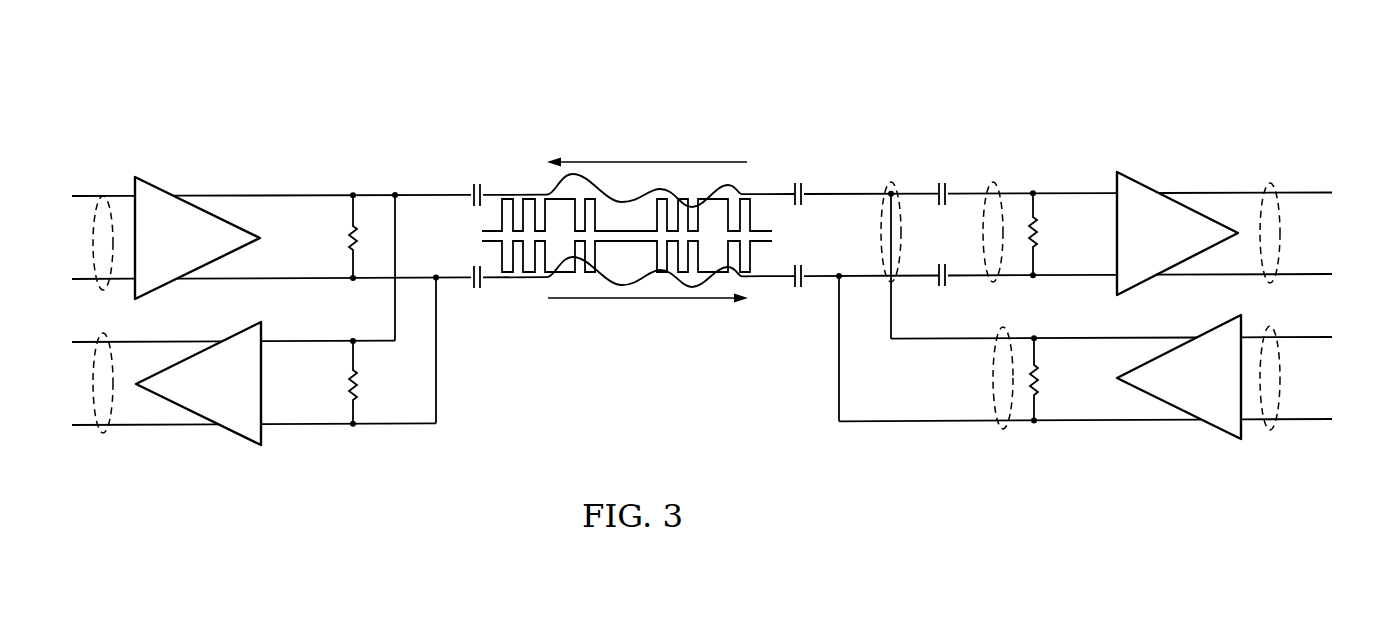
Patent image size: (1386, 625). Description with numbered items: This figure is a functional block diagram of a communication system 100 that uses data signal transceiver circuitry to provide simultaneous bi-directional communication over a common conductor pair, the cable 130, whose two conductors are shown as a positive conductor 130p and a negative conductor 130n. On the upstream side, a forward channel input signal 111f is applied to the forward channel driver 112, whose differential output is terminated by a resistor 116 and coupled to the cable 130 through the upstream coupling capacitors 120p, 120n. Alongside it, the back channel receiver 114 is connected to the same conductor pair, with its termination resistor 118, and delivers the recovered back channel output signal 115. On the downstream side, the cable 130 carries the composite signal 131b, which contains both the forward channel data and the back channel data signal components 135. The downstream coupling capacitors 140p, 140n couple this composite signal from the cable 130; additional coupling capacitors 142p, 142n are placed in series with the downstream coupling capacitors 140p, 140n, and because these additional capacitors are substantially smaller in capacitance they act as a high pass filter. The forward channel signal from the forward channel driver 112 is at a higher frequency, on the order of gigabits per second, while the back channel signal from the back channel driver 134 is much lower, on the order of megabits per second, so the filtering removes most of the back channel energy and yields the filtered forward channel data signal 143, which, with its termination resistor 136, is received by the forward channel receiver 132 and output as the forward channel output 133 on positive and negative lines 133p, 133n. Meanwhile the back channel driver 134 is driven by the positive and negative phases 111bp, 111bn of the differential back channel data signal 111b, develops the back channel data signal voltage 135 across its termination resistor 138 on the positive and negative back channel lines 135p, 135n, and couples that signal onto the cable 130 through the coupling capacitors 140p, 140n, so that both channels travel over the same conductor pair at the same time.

The communication system 100 is at (706, 100).
The forward channel input signal pair 111f is at (102, 193).
The forward channel driver 112 is at (163, 190).
The back channel receiver 114 is at (230, 432).
The back channel output signal pair 115 is at (102, 433).
The termination resistor 116 is at (350, 233).
The termination resistor 118 is at (350, 380).
The upstream coupling capacitor 120p is at (475, 183).
The upstream coupling capacitor 120n is at (475, 289).
The cable 130 is at (613, 145).
The positive conductor of transmission line 130p is at (758, 193).
The negative conductor of transmission line 130n is at (753, 278).
The composite signal 131b is at (891, 181).
The forward channel receiver 132 is at (1137, 183).
The forward channel output signal pair 133 is at (1270, 182).
The forward channel output (positive) 133p is at (1322, 191).
The forward channel output (negative) 133n is at (1322, 273).
The back channel driver 134 is at (1219, 431).
The back channel data signal components 135 is at (1003, 431).
The back channel conductor (positive) 135p is at (920, 339).
The back channel conductor (negative) 135n is at (920, 422).
The termination resistor 136 is at (1036, 230).
The termination resistor 138 is at (1038, 378).
The downstream coupling capacitor 140p is at (800, 182).
The downstream coupling capacitor 140n is at (800, 288).
The additional coupling capacitor 142p is at (942, 180).
The additional coupling capacitor 142n is at (942, 263).
The filtered forward channel data signal 143 is at (993, 181).
The positive phase of differential back channel data signal 111bp is at (1322, 336).
The negative phase of differential back channel data signal 111bn is at (1322, 418).
The differential back channel data signal 111b is at (1270, 431).